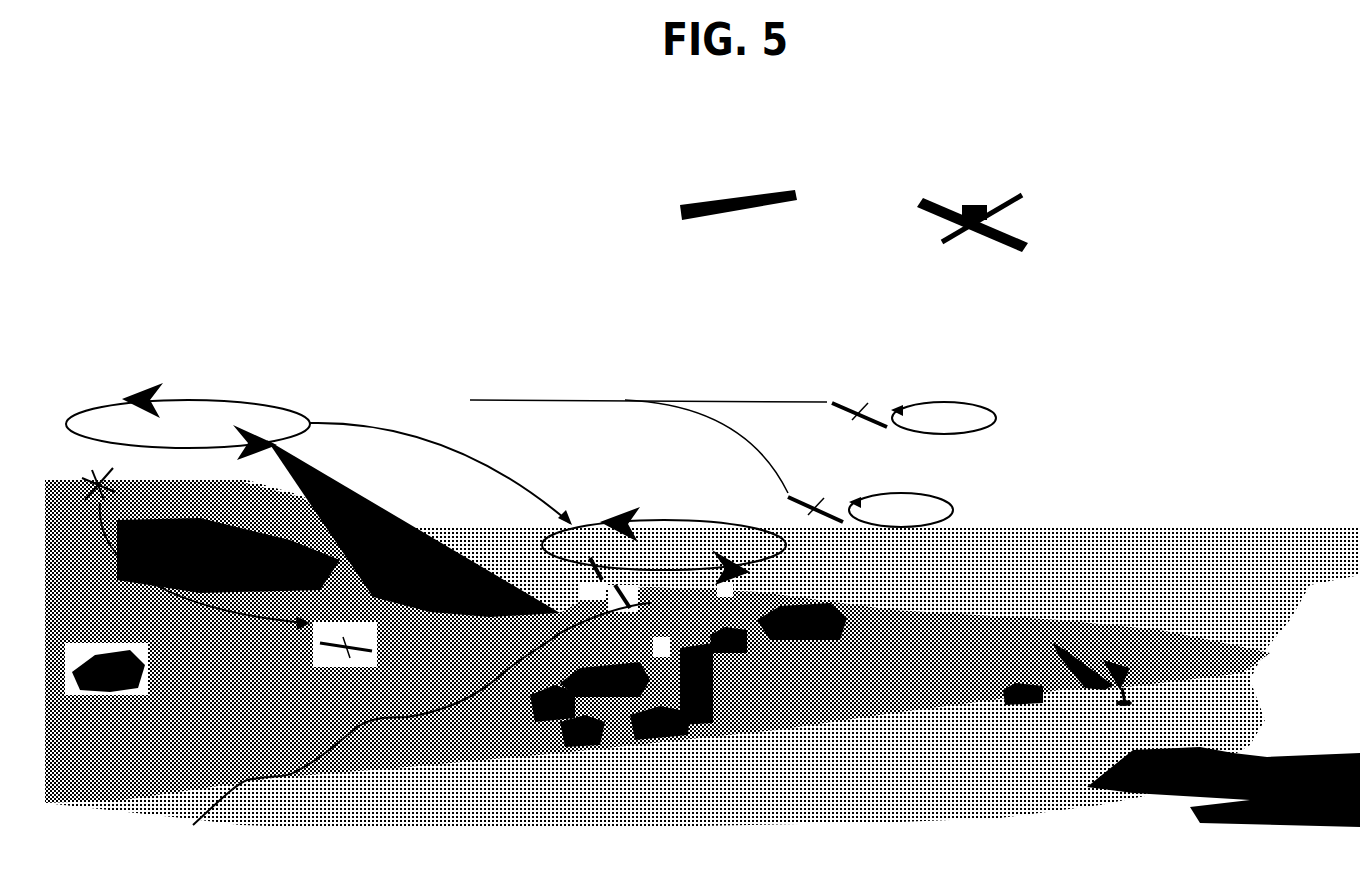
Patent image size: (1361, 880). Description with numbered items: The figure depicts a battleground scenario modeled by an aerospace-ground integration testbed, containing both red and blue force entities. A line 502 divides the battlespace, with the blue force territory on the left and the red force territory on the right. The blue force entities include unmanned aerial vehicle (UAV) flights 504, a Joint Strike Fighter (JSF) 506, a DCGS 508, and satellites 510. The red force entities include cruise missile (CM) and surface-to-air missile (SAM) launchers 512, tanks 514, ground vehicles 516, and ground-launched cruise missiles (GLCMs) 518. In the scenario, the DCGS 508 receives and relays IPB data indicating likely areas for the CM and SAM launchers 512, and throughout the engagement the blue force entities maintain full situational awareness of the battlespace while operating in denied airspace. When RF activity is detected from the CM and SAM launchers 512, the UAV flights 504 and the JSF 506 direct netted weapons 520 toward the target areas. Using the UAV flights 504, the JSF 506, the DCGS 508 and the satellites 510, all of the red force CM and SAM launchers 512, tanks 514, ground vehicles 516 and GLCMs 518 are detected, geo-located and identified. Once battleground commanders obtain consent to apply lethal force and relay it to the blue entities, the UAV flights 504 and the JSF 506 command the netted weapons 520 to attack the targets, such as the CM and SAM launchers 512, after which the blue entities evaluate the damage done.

The line 502 is at (253, 792).
The unmanned aerial vehicle flights 504 is at (165, 400).
The Joint Strike Fighter 506 is at (657, 641).
The DCGS 508 is at (125, 653).
The satellites 510 is at (757, 188).
The CM and SAM launchers 512 is at (700, 725).
The tanks 514 is at (618, 657).
The ground vehicles 516 is at (727, 657).
The ground-launched cruise missiles 518 is at (1087, 697).
The netted weapons 520 is at (872, 388).